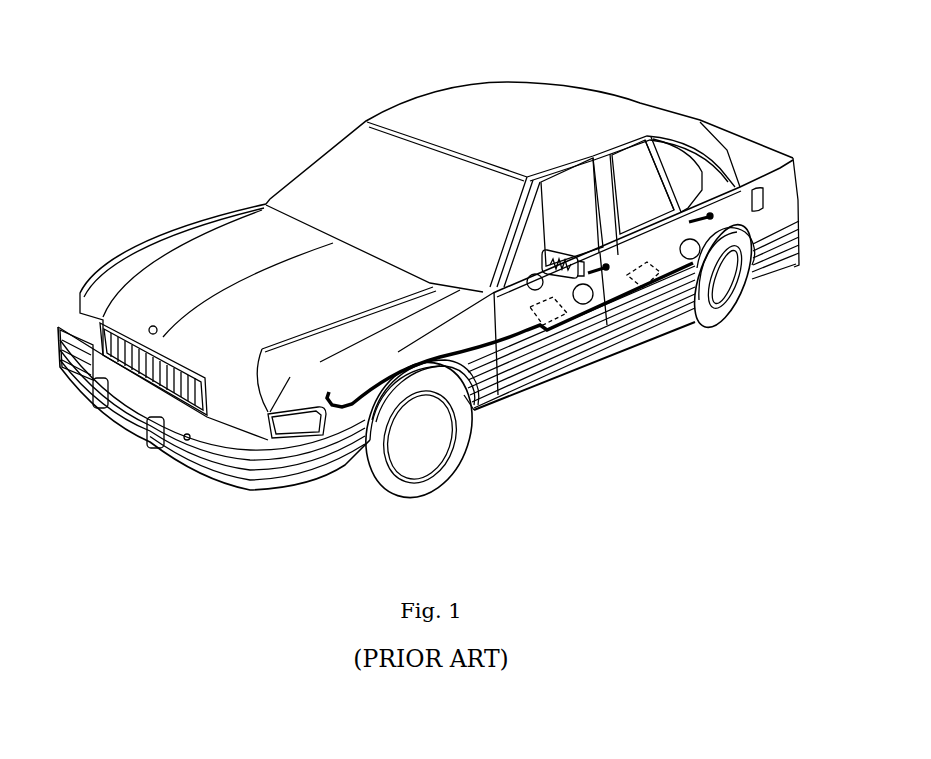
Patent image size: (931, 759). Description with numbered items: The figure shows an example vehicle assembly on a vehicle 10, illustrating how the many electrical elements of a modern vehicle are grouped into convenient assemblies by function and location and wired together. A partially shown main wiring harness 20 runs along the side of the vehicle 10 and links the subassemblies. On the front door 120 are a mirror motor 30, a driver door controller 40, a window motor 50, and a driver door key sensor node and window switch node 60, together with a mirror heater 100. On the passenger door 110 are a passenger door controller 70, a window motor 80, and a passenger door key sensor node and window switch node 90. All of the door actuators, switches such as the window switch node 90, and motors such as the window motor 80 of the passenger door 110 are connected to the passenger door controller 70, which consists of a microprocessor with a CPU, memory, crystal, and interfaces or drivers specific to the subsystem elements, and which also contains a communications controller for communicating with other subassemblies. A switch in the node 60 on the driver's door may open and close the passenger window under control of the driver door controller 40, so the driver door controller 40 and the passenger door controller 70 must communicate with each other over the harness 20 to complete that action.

The vehicle 10 is at (410, 123).
The main wiring harness 20 is at (350, 412).
The mirror motor 30 is at (533, 290).
The driver door controller 40 is at (550, 327).
The window motor 50 is at (583, 304).
The driver door key sensor node and window switch node 60 is at (603, 278).
The passenger door controller 70 is at (650, 288).
The window motor 80 is at (691, 259).
The passenger door key sensor node and window switch node 90 is at (712, 224).
The mirror heater 100 is at (565, 252).
The passenger door 110 is at (620, 163).
The front door 120 is at (570, 177).